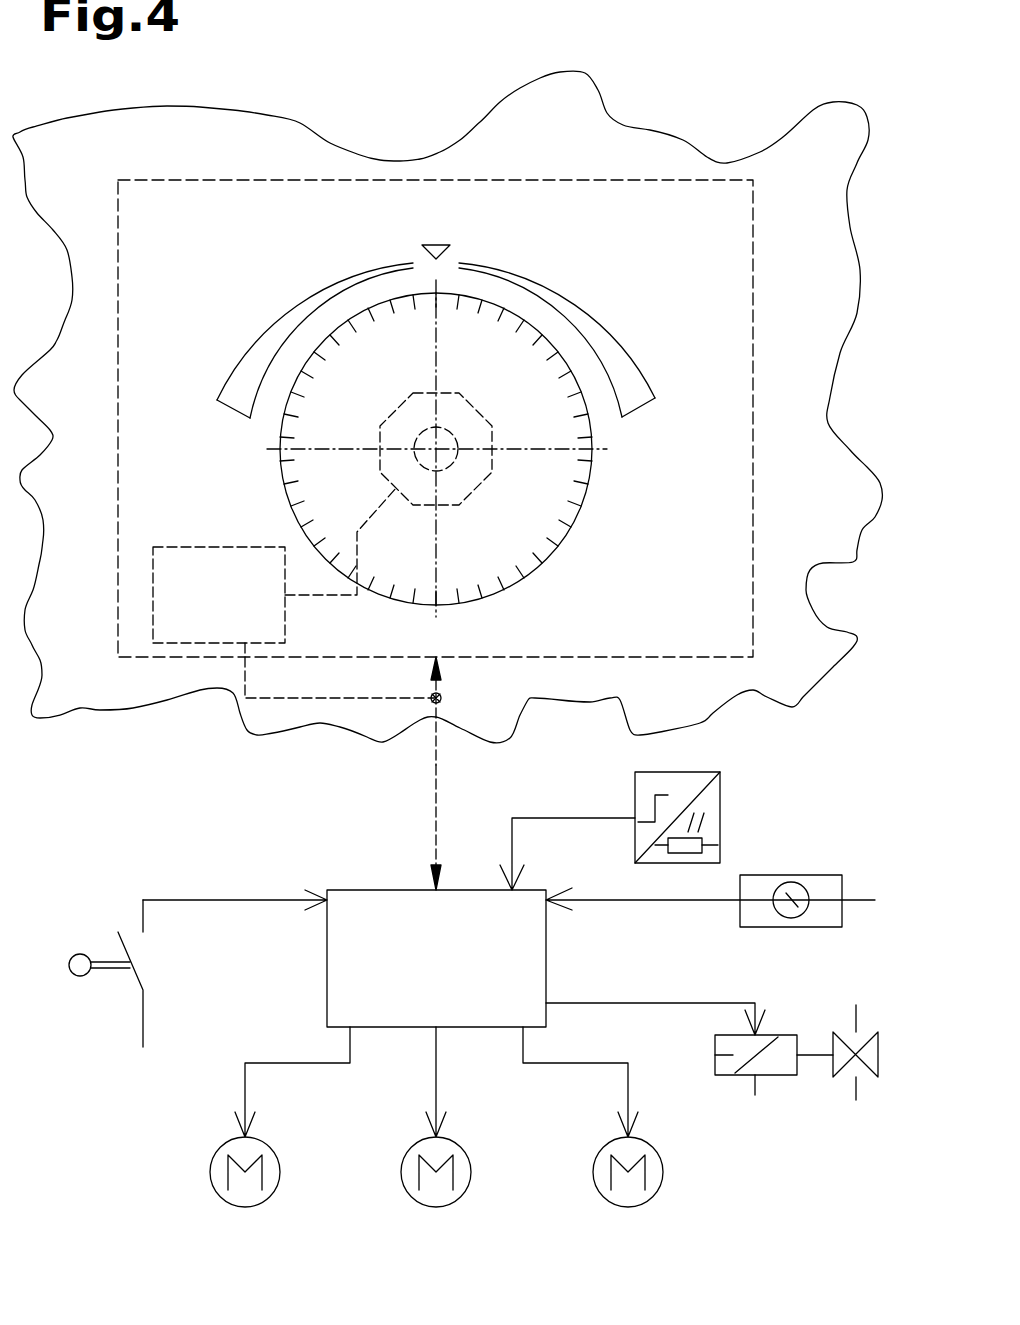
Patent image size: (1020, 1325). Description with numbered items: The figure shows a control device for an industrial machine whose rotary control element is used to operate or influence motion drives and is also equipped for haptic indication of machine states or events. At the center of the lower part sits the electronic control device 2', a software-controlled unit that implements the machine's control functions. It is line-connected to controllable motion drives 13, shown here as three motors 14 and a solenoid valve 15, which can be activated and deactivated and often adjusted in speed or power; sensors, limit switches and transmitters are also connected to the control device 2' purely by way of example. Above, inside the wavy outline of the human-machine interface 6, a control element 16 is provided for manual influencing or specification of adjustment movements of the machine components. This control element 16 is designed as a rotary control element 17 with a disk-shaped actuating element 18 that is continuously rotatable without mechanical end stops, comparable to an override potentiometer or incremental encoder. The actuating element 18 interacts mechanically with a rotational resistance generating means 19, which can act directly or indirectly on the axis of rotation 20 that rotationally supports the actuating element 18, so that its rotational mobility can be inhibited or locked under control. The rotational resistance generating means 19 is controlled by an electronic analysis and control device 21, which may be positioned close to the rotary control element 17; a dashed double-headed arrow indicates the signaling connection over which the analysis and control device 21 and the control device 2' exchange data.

The control device 2' is at (472, 951).
The human-machine interface 6 is at (802, 685).
The motion drive 13 is at (785, 1007).
The motor 14 is at (267, 1193).
The solenoid valve 15 is at (778, 1062).
The control element 16 is at (518, 225).
The rotary control element 17 is at (343, 340).
The actuating element 18 is at (285, 488).
The rotational resistance generating means 19 is at (465, 487).
The axis of rotation 20 is at (447, 437).
The analysis and control device 21 is at (188, 623).